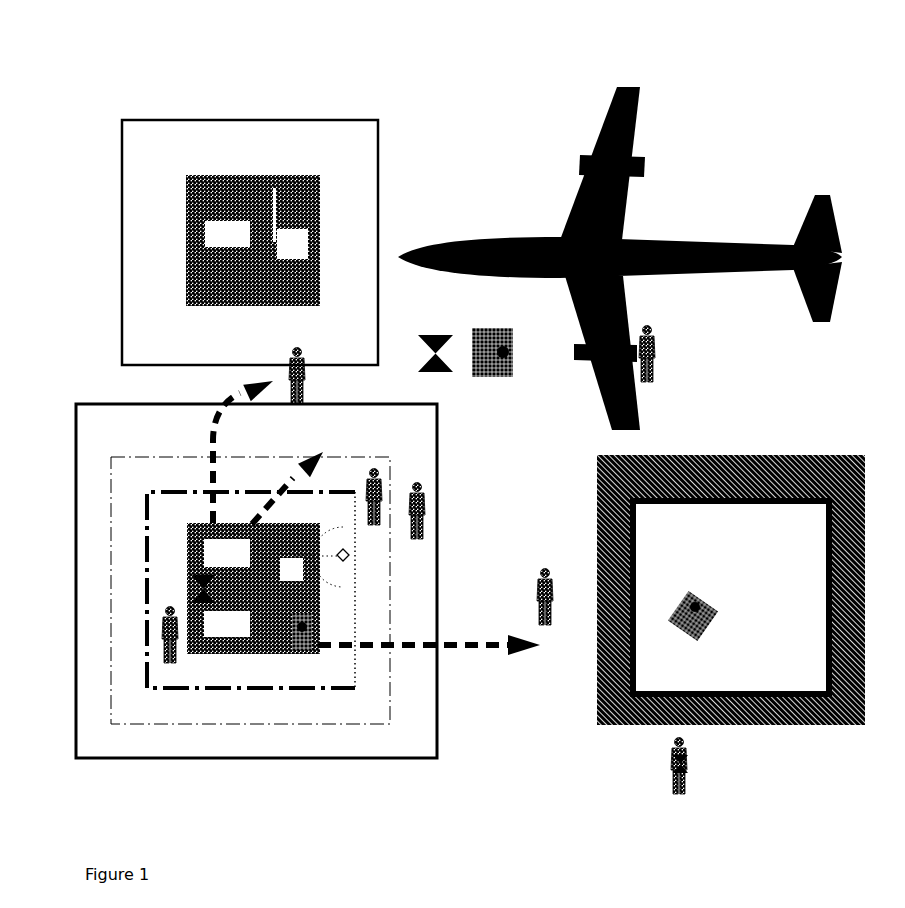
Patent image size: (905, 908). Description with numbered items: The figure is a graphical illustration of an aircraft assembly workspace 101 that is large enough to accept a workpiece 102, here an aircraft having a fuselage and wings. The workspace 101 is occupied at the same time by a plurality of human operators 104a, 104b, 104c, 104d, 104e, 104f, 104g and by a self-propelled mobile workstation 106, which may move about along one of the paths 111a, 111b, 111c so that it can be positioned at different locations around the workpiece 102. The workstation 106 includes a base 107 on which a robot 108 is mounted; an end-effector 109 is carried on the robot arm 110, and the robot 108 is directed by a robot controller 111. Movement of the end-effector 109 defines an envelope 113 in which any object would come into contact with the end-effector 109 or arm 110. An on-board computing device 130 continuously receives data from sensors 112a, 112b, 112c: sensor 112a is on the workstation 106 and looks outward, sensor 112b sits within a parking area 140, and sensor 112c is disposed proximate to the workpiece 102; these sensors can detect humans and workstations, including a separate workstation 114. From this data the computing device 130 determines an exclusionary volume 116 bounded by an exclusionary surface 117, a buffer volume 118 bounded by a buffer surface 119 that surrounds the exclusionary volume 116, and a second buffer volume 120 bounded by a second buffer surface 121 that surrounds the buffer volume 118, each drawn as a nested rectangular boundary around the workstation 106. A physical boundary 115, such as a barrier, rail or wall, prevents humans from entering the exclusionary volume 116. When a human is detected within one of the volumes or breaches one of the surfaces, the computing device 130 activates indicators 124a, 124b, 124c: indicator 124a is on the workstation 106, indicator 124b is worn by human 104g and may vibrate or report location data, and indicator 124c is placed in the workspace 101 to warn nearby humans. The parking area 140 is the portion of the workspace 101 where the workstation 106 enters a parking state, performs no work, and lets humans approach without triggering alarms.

The workspace 101 is at (632, 30).
The workpiece 102 is at (688, 278).
The human operator 104a is at (165, 630).
The human operator 104b is at (382, 498).
The human operator 104c is at (418, 497).
The human operator 104d is at (540, 583).
The human operator 104e is at (288, 357).
The human operator 104f is at (654, 340).
The human operator 104g is at (667, 800).
The mobile workstation 106 is at (298, 655).
The base 107 is at (187, 538).
The robot 108 is at (295, 247).
The end-effector 109 is at (352, 556).
The robot arm 110 is at (330, 553).
The robot controller 111 is at (220, 293).
The path 111a is at (210, 446).
The path 111b is at (306, 460).
The path 111c is at (470, 648).
The sensor 112a is at (298, 617).
The sensor 112b is at (688, 602).
The sensor 112c is at (490, 365).
The envelope 113 is at (348, 565).
The workstation 114 is at (252, 175).
The physical boundary 115 is at (170, 690).
The exclusionary volume 116 is at (330, 690).
The exclusionary surface 117 is at (258, 688).
The buffer volume 118 is at (355, 725).
The buffer surface 119 is at (186, 114).
The second buffer volume 120 is at (157, 760).
The second buffer surface 121 is at (87, 760).
The indicator 124a is at (200, 580).
The indicator 124b is at (690, 765).
The indicator 124c is at (437, 335).
The computing device 130 is at (228, 539).
The parking area 140 is at (782, 725).